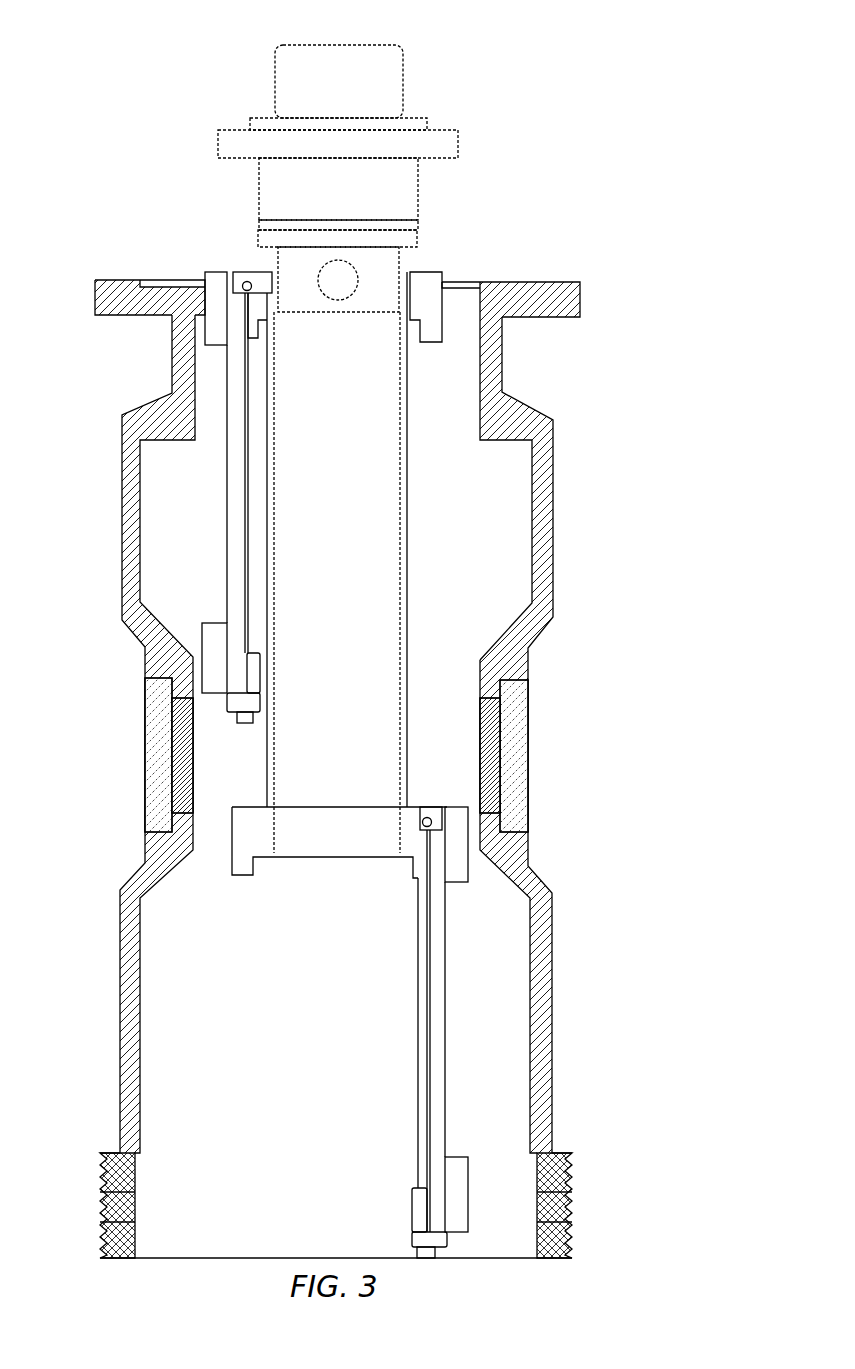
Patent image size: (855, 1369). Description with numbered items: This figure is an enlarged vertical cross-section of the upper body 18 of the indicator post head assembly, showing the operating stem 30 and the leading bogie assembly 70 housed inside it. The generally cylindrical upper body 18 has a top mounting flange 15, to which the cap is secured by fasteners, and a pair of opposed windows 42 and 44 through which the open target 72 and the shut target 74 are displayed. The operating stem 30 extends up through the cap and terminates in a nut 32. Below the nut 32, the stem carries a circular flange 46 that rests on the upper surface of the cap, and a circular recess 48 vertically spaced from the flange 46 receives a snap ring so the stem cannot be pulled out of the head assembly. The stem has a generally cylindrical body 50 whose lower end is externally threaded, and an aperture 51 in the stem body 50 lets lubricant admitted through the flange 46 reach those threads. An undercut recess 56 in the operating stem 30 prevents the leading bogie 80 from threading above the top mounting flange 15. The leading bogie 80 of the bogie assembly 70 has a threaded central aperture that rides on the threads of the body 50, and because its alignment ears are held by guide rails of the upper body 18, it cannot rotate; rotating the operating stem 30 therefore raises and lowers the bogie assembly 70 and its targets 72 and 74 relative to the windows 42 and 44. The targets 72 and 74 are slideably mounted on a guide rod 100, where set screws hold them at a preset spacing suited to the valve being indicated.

The top mounting flange 15 is at (553, 282).
The upper body 18 is at (553, 512).
The operating stem 30 is at (480, 82).
The nut 32 is at (403, 77).
The window 42 is at (143, 782).
The window 44 is at (528, 718).
The circular flange 46 is at (458, 145).
The circular recess 48 is at (418, 225).
The cylindrical body 50 is at (411, 568).
The aperture 51 is at (338, 291).
The undercut recess 56 is at (400, 262).
The leading bogie assembly 70 is at (216, 530).
The open target 72 is at (205, 279).
The shut target 74 is at (204, 637).
The leading bogie 80 is at (437, 268).
The guide rod 100 is at (241, 724).